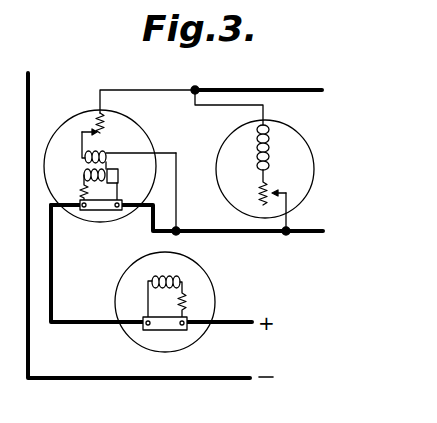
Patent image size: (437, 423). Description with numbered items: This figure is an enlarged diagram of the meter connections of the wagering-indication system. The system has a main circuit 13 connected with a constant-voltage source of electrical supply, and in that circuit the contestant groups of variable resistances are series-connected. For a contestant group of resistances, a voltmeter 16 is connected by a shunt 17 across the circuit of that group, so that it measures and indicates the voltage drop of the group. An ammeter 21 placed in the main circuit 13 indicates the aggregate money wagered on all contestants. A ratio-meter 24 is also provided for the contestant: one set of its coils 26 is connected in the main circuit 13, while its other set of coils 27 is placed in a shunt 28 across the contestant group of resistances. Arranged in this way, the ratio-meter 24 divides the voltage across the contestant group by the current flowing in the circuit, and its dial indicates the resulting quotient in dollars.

The main circuit 13 is at (93, 341).
The voltmeter 16 is at (265, 175).
The shunt 17 is at (298, 102).
The ammeter 21 is at (208, 307).
The ratio-meter 24 is at (133, 132).
The set of coils 26 is at (110, 183).
The other set of coils 27 is at (85, 158).
The shunt 28 is at (198, 144).